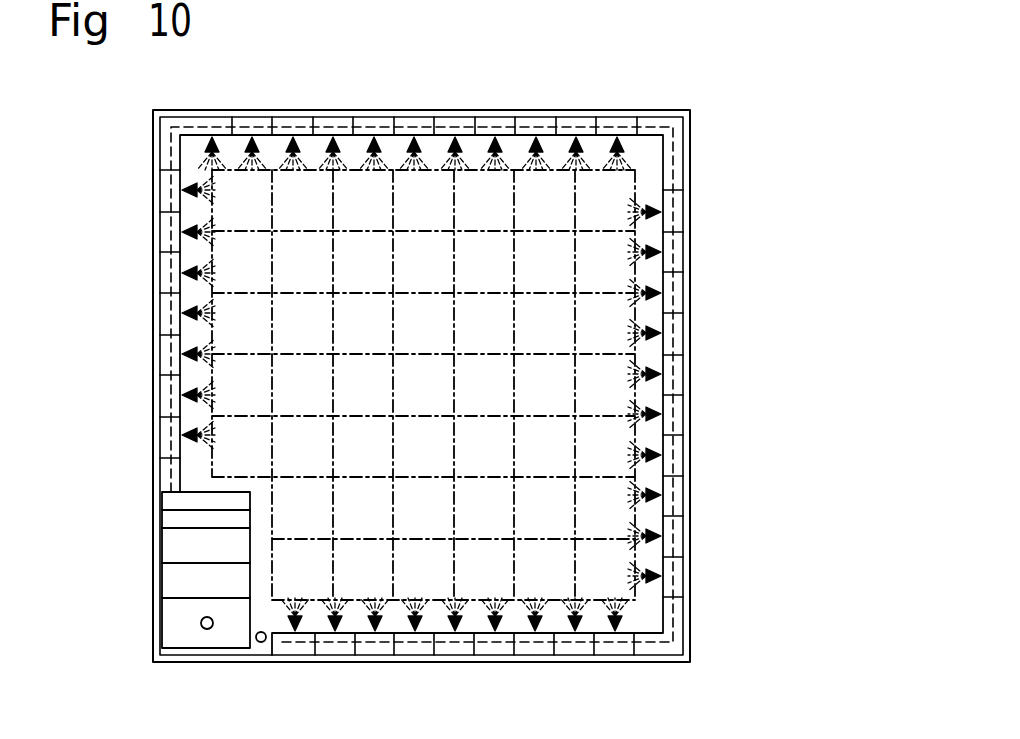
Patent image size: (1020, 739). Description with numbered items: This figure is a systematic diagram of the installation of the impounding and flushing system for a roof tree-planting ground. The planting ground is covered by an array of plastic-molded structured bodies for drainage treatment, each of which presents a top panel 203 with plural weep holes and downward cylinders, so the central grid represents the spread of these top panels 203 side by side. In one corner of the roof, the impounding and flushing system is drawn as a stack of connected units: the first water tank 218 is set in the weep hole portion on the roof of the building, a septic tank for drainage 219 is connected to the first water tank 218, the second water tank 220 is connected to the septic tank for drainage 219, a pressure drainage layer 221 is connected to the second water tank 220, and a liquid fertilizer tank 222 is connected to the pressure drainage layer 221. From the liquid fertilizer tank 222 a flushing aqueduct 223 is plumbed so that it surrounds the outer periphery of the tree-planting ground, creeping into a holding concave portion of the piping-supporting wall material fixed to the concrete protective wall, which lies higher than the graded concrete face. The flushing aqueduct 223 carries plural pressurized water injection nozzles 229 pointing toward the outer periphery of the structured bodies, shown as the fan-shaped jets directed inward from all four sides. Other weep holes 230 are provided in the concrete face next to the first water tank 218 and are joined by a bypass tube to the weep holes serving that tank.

The top panel 203 is at (550, 208).
The first water tank 218 is at (172, 627).
The septic tank for drainage 219 is at (172, 585).
The second water tank 220 is at (172, 550).
The pressure drainage layer 221 is at (175, 520).
The liquid fertilizer tank 222 is at (172, 500).
The flushing aqueduct 223 is at (345, 128).
The pressurized water injection nozzles 229 is at (422, 384).
The other weep holes 230 is at (259, 642).